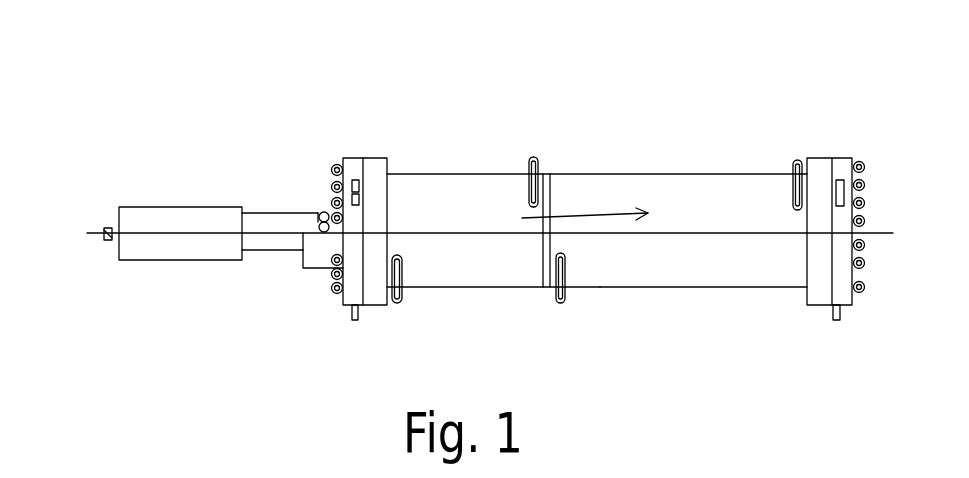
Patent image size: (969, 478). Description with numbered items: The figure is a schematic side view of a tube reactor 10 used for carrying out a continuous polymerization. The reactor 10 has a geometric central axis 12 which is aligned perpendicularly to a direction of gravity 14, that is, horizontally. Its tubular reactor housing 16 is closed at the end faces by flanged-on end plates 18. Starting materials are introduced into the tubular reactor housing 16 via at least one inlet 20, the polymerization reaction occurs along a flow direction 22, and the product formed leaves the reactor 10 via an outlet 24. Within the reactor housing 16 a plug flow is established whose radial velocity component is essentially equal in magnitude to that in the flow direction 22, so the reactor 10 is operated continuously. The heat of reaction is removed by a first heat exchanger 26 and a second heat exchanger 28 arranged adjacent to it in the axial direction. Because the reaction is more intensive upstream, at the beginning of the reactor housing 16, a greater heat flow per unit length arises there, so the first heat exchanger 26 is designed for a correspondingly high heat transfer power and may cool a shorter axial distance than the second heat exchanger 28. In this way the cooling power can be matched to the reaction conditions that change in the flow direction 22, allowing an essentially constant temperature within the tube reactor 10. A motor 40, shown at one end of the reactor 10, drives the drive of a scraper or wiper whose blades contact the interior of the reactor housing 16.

The reactor 10 is at (268, 140).
The geometric central axis 12 is at (102, 238).
The direction of gravity 14 is at (330, 48).
The tubular reactor housing 16 is at (486, 205).
The end plates 18 is at (318, 262).
The inlet 20 is at (360, 315).
The flow direction 22 is at (588, 213).
The outlet 24 is at (838, 314).
The first heat exchanger 26 is at (460, 272).
The second heat exchanger 28 is at (662, 272).
The motor 40 is at (186, 250).